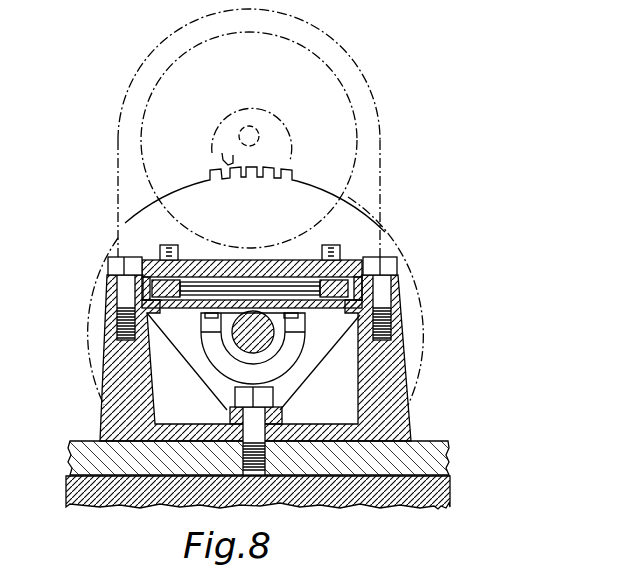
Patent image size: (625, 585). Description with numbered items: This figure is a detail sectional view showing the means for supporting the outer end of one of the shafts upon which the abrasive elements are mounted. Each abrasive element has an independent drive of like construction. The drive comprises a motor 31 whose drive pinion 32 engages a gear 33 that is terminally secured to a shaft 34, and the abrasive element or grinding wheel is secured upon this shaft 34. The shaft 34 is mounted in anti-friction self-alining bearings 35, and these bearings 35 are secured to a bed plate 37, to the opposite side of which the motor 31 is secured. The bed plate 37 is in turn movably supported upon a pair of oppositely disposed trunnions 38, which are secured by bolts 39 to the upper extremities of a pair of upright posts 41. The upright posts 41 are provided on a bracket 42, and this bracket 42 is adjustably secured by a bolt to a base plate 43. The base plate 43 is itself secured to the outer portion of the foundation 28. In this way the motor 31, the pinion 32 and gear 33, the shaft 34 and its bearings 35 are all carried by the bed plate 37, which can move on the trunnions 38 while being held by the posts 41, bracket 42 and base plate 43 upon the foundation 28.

The foundation 28 is at (102, 505).
The motor 31 is at (360, 138).
The drive pinion 32 is at (290, 137).
The gear 33 is at (307, 176).
The shaft 34 is at (243, 350).
The anti-friction self-alining bearings 35 is at (205, 339).
The bed plate 37 is at (263, 261).
The trunnions 38 is at (155, 277).
The bolts 39 is at (118, 288).
The upright posts 41 is at (110, 387).
The bracket 42 is at (330, 350).
The base plate 43 is at (452, 462).